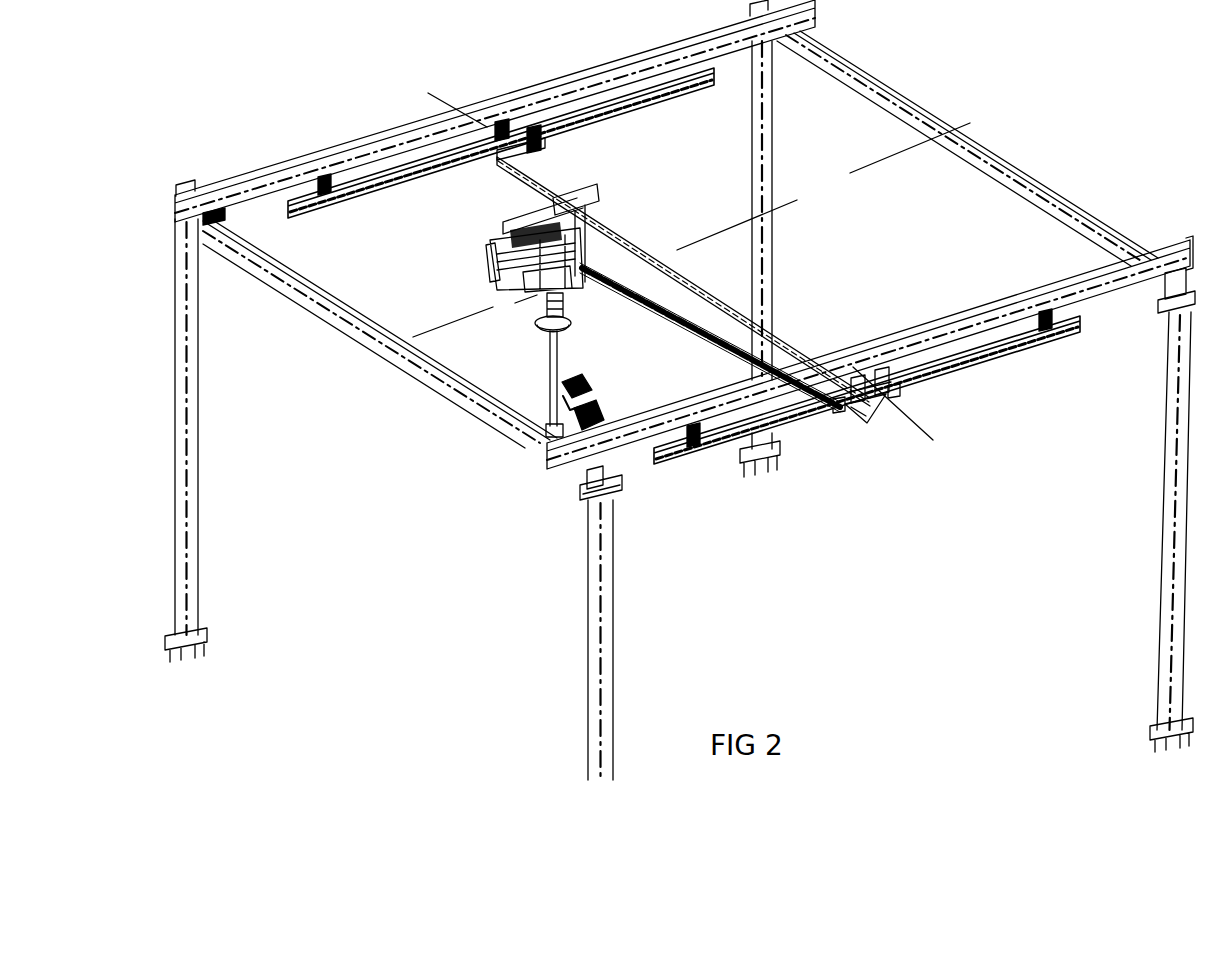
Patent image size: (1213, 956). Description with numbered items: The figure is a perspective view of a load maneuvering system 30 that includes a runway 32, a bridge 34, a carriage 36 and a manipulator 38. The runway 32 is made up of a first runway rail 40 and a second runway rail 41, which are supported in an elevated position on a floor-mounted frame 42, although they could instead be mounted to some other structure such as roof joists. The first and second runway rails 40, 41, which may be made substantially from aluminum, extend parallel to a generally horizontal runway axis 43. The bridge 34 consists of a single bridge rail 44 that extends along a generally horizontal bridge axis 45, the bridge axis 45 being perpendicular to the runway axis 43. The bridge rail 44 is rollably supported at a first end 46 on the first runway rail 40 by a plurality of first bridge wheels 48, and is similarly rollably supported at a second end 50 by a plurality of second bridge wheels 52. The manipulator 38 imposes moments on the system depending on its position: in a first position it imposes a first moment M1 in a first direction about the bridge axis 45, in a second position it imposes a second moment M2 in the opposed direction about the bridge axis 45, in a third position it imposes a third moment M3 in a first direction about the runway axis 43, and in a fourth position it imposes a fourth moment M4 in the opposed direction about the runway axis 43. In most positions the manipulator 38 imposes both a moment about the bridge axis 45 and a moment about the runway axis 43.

The load maneuvering system 30 is at (1019, 85).
The runway 32 is at (845, 136).
The bridge 34 is at (706, 268).
The carriage 36 is at (598, 198).
The manipulator 38 is at (565, 372).
The first runway rail 40 is at (670, 97).
The second runway rail 41 is at (1007, 337).
The floor-mounted frame 42 is at (1072, 278).
The runway axis 43 is at (433, 327).
The bridge rail 44 is at (717, 293).
The bridge axis 45 is at (910, 428).
The first end 46 is at (500, 175).
The first bridge wheels 48 is at (445, 124).
The second end 50 is at (862, 426).
The second bridge wheels 52 is at (900, 387).
The first moment M1 is at (593, 167).
The second moment M2 is at (574, 180).
The third moment M3 is at (567, 142).
The fourth moment M4 is at (556, 156).